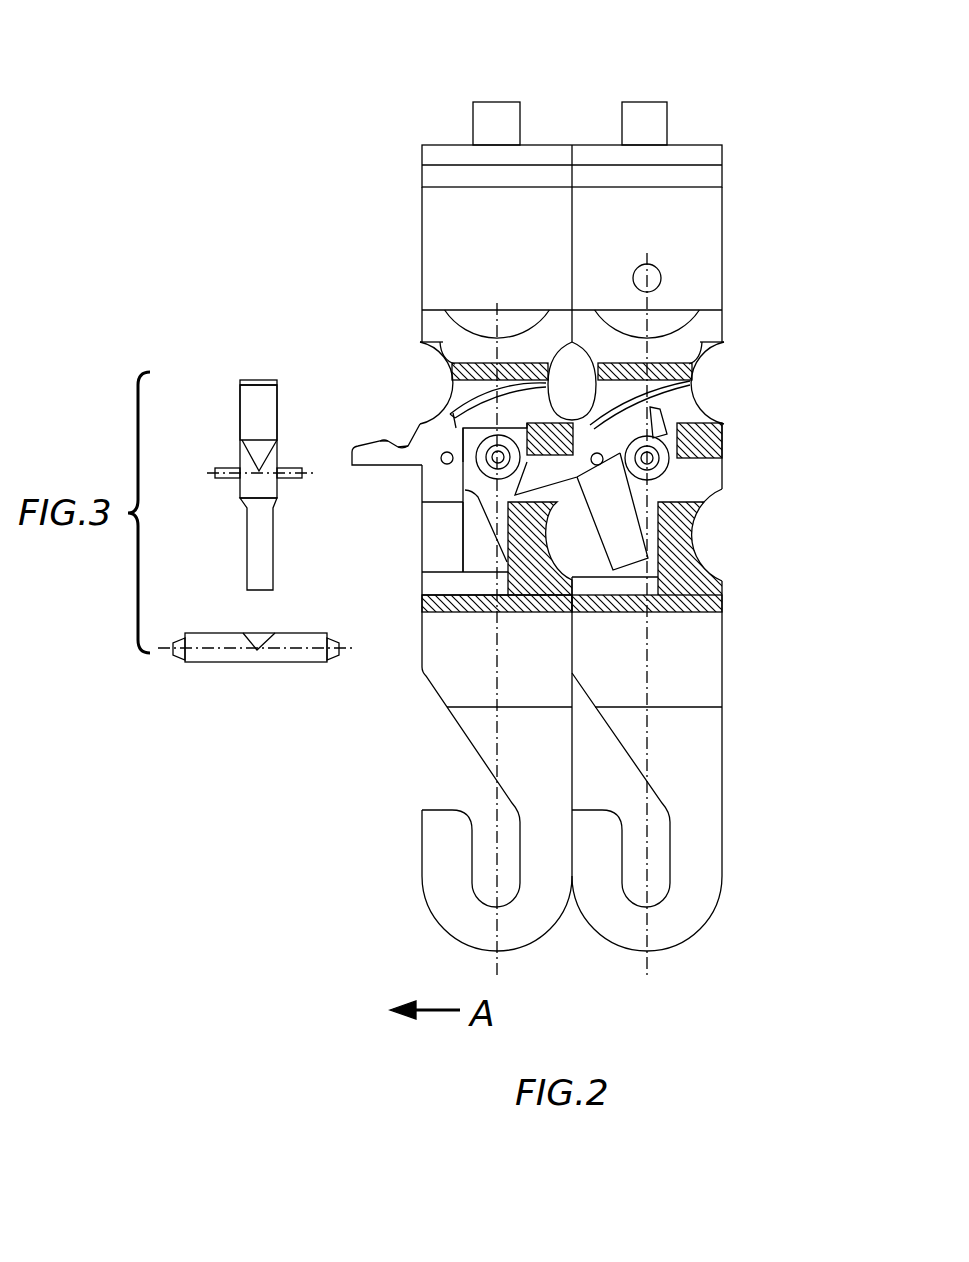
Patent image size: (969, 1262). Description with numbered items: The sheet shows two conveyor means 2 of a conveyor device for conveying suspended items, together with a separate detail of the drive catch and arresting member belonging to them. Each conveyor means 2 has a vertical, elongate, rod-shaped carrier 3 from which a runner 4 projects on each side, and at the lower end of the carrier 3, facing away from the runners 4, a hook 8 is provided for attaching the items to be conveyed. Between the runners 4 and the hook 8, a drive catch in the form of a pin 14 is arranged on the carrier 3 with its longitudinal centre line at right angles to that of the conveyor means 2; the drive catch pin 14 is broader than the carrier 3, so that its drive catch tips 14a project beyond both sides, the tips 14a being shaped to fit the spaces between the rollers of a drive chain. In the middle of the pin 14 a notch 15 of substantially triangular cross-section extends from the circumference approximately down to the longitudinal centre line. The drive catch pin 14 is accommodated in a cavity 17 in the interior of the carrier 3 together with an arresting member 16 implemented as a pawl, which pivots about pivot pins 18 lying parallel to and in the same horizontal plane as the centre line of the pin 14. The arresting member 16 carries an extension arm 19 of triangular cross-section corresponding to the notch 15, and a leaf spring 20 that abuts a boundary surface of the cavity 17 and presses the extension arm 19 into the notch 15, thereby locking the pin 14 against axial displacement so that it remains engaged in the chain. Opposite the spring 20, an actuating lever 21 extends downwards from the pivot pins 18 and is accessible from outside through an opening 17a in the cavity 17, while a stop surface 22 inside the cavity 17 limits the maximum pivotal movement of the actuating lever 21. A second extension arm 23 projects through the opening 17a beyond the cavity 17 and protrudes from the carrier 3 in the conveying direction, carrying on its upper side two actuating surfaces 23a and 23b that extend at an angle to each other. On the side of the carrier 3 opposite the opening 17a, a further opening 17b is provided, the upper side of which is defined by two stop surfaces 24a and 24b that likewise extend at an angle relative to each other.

In FIG. 2, the conveyor means 2 is at (524, 98).
In FIG. 2, the carrier 3 is at (698, 682).
In FIG. 2, the runner 4 is at (470, 322).
In FIG. 2, the hook 8 is at (447, 860).
In FIG. 2, the drive catch pin 14 is at (556, 511).
In FIG. 3, the drive catch pin 14 is at (292, 660).
In FIG. 3, the drive catch tip 14a is at (178, 660).
In FIG. 3, the notch 15 is at (242, 652).
In FIG. 2, the arresting member 16 is at (430, 397).
In FIG. 3, the arresting member 16 is at (257, 362).
In FIG. 2, the cavity 17 is at (508, 418).
In FIG. 2, the opening 17a is at (412, 580).
In FIG. 2, the further opening 17b is at (736, 500).
In FIG. 3, the pivot pin 18 is at (290, 465).
In FIG. 2, the extension arm 19 is at (461, 450).
In FIG. 3, the extension arm 19 is at (258, 455).
In FIG. 2, the leaf spring 20 is at (447, 362).
In FIG. 3, the leaf spring 20 is at (257, 413).
In FIG. 2, the actuating lever 21 is at (440, 537).
In FIG. 3, the actuating lever 21 is at (255, 552).
In FIG. 2, the stop surface 22 is at (482, 516).
In FIG. 2, the second extension arm 23 is at (392, 455).
In FIG. 2, the actuating surface 23a is at (365, 443).
In FIG. 2, the actuating surface 23b is at (407, 445).
In FIG. 2, the stop surface 24a is at (700, 450).
In FIG. 2, the stop surface 24b is at (702, 462).